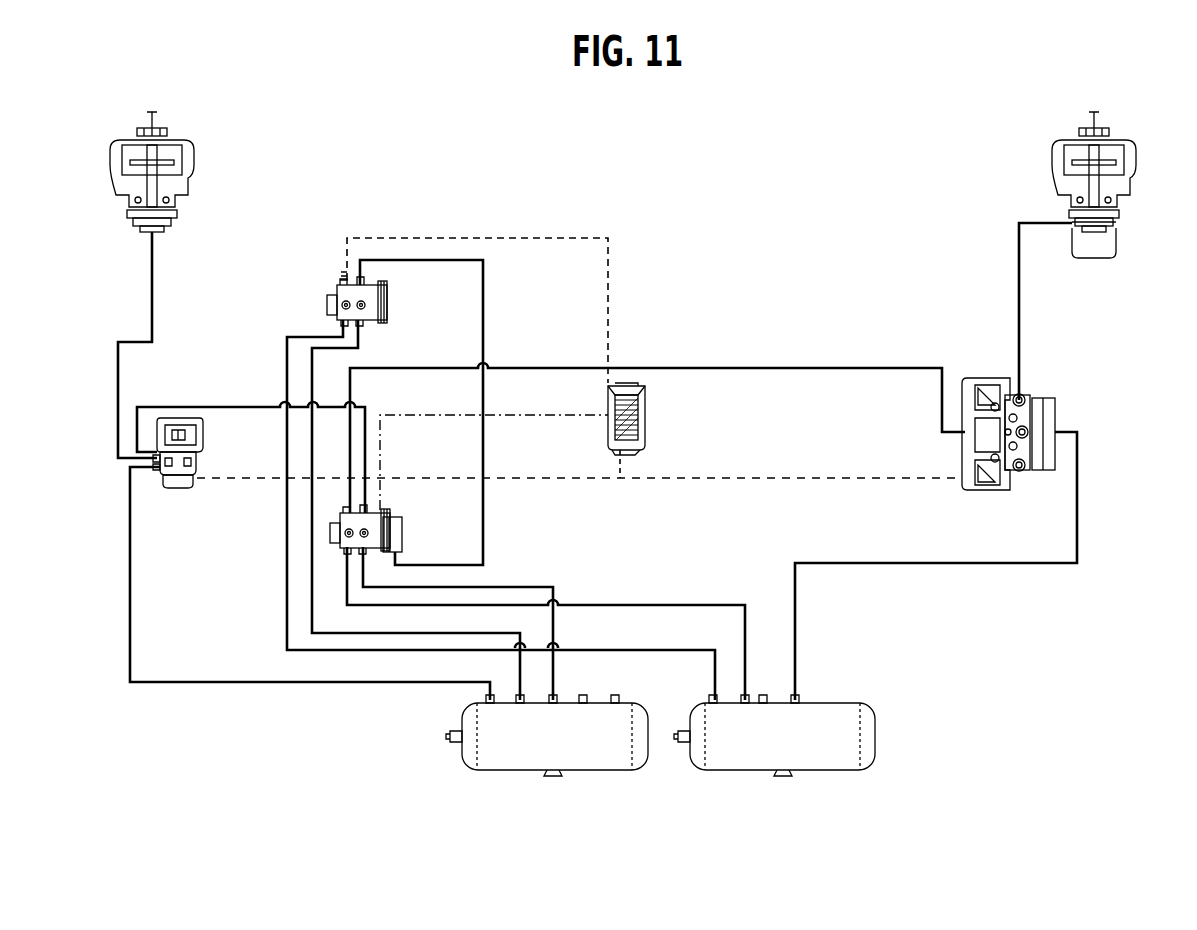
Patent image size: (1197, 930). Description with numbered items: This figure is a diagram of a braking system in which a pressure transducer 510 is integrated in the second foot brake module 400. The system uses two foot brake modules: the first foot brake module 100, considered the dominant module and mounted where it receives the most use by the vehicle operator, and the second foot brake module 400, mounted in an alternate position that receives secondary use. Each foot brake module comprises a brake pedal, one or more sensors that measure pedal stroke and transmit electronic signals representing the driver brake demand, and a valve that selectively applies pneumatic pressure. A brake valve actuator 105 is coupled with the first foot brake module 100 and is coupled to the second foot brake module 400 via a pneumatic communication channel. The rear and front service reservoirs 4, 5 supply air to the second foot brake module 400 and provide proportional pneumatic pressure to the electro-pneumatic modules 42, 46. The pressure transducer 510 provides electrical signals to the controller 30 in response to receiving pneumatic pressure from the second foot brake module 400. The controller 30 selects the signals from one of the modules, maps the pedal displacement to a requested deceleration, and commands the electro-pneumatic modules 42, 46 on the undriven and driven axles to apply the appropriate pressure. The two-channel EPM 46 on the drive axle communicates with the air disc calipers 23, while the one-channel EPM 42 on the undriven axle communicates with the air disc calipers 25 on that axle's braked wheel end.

The rear service reservoir 4 is at (848, 770).
The front service reservoir 5 is at (618, 770).
The air disc calipers 23 is at (1137, 144).
The air disc calipers 25 is at (113, 165).
The controller 30 is at (645, 407).
The electro-pneumatic module 42 is at (203, 445).
The electro-pneumatic module 46 is at (1057, 408).
The first foot brake module 100 is at (330, 532).
The brake valve actuator 105 is at (402, 533).
The second foot brake module 400 is at (390, 304).
The pressure transducer 510 is at (340, 283).